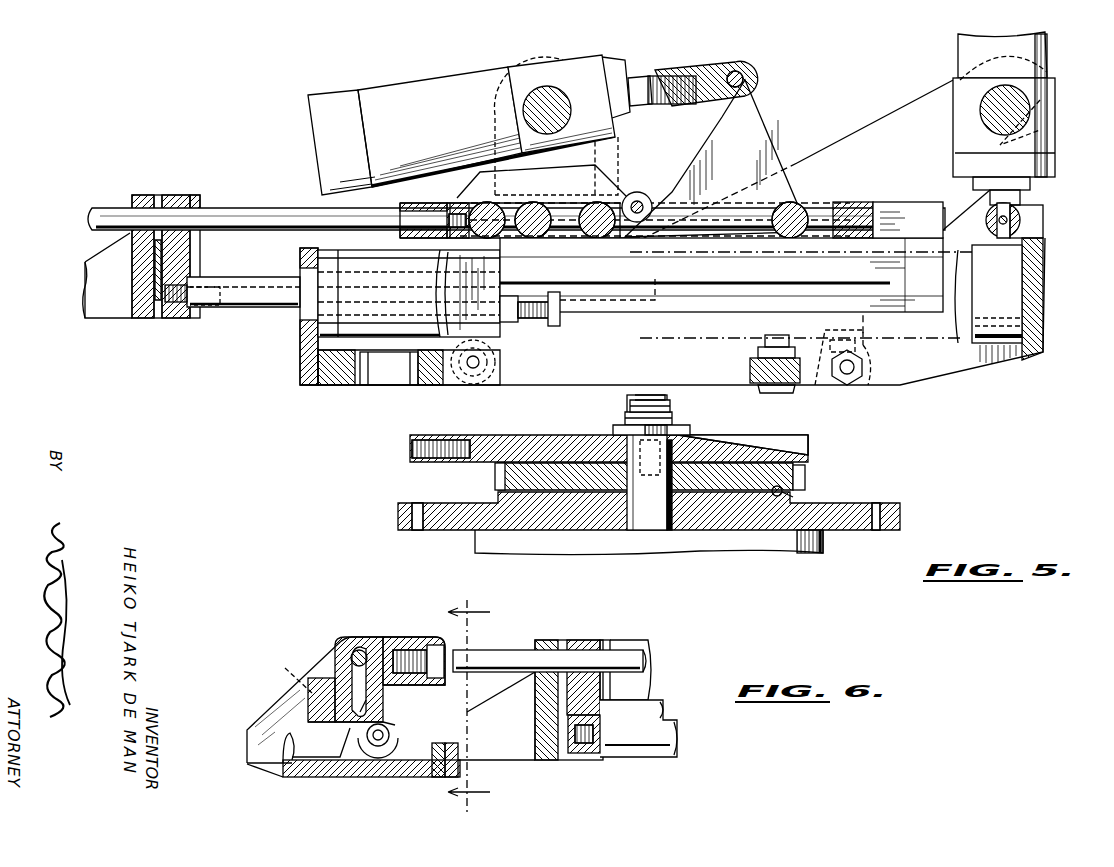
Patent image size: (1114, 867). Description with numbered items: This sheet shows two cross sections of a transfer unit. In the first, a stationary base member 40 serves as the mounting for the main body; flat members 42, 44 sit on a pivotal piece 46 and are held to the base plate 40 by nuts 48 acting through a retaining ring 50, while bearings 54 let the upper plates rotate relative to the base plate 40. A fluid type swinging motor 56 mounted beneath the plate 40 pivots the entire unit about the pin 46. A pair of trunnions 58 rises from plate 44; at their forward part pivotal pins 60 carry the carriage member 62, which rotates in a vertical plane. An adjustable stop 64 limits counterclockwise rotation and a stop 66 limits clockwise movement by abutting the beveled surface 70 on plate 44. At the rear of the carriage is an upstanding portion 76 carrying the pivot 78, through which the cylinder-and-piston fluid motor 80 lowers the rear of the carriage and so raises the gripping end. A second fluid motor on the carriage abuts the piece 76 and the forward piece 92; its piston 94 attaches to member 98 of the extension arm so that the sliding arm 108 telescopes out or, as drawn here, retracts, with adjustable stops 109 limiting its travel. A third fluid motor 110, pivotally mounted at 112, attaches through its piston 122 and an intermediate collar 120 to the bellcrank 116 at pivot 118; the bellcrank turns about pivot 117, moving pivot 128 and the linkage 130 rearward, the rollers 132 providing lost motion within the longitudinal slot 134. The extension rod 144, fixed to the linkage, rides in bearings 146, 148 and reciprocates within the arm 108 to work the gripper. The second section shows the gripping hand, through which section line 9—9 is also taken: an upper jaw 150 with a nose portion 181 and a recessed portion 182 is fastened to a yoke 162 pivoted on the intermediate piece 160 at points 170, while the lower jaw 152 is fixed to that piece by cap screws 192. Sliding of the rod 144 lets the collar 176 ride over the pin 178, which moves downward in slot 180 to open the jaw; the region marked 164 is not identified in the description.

In FIG. 5, the stationary base member 40 is at (900, 510).
In FIG. 5, the flat member 42 is at (806, 478).
In FIG. 5, the flat member 44 is at (809, 450).
In FIG. 5, the pivotal piece 46 is at (650, 522).
In FIG. 5, the nuts 48 is at (672, 420).
In FIG. 5, the retaining ring 50 is at (692, 430).
In FIG. 5, the bearings 54 is at (795, 497).
In FIG. 5, the fluid type swinging motor 56 is at (820, 556).
In FIG. 5, the trunnions 58 is at (872, 140).
In FIG. 5, the pivotal pins 60 is at (472, 370).
In FIG. 5, the carriage member 62 is at (962, 360).
In FIG. 5, the adjustable stop 64 is at (872, 386).
In FIG. 5, the stop 66 is at (800, 385).
In FIG. 5, the beveled surface 70 is at (757, 442).
In FIG. 5, the upstanding portion 76 is at (1035, 302).
In FIG. 5, the pivot 78 is at (1027, 213).
In FIG. 5, the fluid motor 80 is at (1030, 54).
In FIG. 5, the forward piece 92 is at (299, 350).
In FIG. 5, the piston 94 is at (252, 294).
In FIG. 6, the member of the extension arm 98 is at (570, 762).
In FIG. 5, the sliding arm 108 is at (902, 208).
In FIG. 5, the adjustable stops 109 is at (545, 327).
In FIG. 5, the reciprocating-type fluid motor 110 is at (445, 86).
In FIG. 5, the pivotal mounting 112 is at (548, 85).
In FIG. 5, the bellcrank 116 is at (758, 147).
In FIG. 5, the pivot 117 is at (795, 206).
In FIG. 5, the pivot 118 is at (750, 75).
In FIG. 5, the intermediate collar 120 is at (700, 78).
In FIG. 5, the motor piston 122 is at (630, 92).
In FIG. 5, the pivot 128 is at (640, 200).
In FIG. 5, the linkage 130 is at (556, 210).
In FIG. 5, the rollers 132 is at (485, 210).
In FIG. 5, the longitudinal slot 134 is at (562, 224).
In FIG. 5, the extension rod 144 is at (233, 214).
In FIG. 6, the extension rod 144 is at (506, 656).
In FIG. 5, the bearing 146 is at (408, 238).
In FIG. 5, the bearing 148 is at (173, 196).
In FIG. 6, the upper jaw 150 is at (268, 718).
In FIG. 6, the lower jaw 152 is at (290, 780).
In FIG. 6, the intermediate piece 160 is at (515, 752).
In FIG. 6, the yoke 162 is at (322, 688).
In FIG. 6, the surface 164 is at (284, 676).
In FIG. 6, the pivot points 170 is at (389, 732).
In FIG. 6, the collar 176 is at (392, 648).
In FIG. 6, the pin 178 is at (360, 650).
In FIG. 6, the slot 180 is at (367, 700).
In FIG. 6, the nose portion 181 is at (250, 756).
In FIG. 6, the recessed portion 182 is at (280, 760).
In FIG. 6, the cap screws 192 is at (462, 772).
In FIG. 6, the section line 9— 9 is at (460, 706).